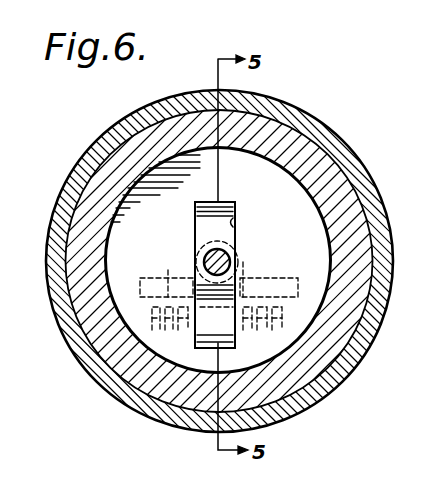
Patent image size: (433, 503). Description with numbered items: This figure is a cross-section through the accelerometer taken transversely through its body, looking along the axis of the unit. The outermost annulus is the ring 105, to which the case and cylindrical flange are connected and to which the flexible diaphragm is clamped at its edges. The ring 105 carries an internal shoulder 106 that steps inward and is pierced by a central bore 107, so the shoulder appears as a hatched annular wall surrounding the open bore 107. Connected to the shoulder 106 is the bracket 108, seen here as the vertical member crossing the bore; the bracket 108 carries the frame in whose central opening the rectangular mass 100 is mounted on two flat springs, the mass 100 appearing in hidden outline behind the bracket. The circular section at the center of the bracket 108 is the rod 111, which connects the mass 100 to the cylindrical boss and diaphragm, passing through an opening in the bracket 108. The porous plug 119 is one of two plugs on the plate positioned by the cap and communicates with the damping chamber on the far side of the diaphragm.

The porous plug 119 is at (107, 124).
The ring 105 is at (184, 124).
The internal shoulder 106 is at (270, 178).
The bracket 108 is at (210, 228).
The central bore 107 is at (234, 224).
The rod 111 is at (229, 257).
The rectangular mass 100 is at (168, 275).